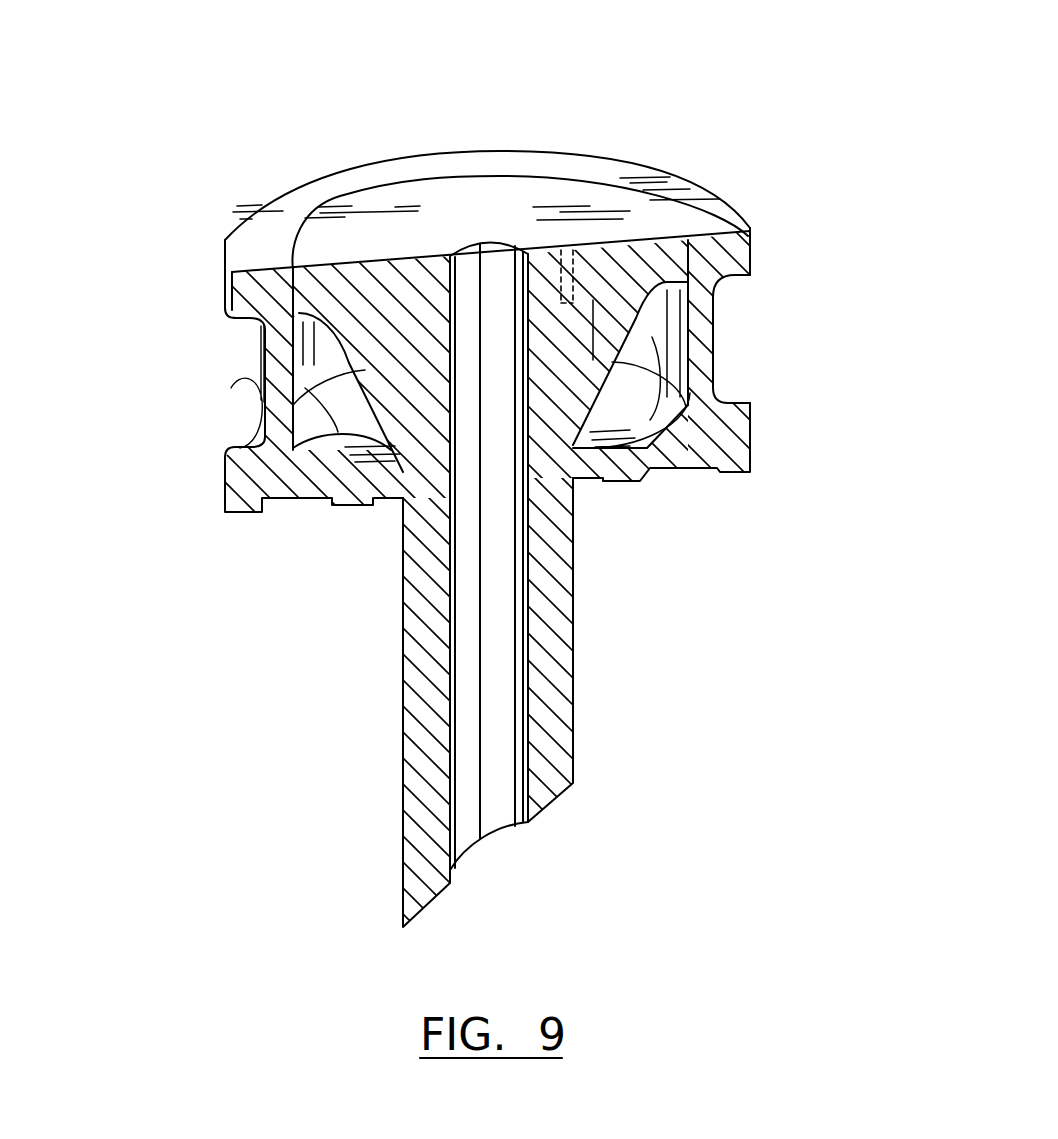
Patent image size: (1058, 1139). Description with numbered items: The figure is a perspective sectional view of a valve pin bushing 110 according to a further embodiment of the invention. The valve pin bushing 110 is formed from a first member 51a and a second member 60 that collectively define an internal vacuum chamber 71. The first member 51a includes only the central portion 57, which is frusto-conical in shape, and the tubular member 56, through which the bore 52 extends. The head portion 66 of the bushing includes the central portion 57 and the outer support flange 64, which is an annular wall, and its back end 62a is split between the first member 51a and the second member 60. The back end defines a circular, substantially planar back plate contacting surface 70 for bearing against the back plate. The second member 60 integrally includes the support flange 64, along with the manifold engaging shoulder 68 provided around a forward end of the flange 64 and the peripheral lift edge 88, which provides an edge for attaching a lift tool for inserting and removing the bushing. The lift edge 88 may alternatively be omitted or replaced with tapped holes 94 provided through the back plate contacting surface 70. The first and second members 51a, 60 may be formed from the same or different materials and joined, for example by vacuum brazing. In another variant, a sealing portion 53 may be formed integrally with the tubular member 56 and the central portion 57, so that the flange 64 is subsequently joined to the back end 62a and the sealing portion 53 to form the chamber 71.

The valve pin bushing 110 is at (708, 95).
The back plate contacting surface 70 is at (415, 170).
The first member 51a is at (585, 213).
The back end 62a is at (313, 293).
The tapped holes 94 is at (575, 282).
The central portion 57 is at (595, 327).
The lift edge 88 is at (751, 245).
The second member 60 is at (713, 330).
The support flange 64 is at (713, 365).
The shoulder 68 is at (752, 440).
The head portion 66 is at (133, 245).
The internal vacuum chamber 71 is at (323, 357).
The sealing portion 53 is at (327, 503).
The tubular member 56 is at (553, 618).
The bore 52 is at (498, 742).